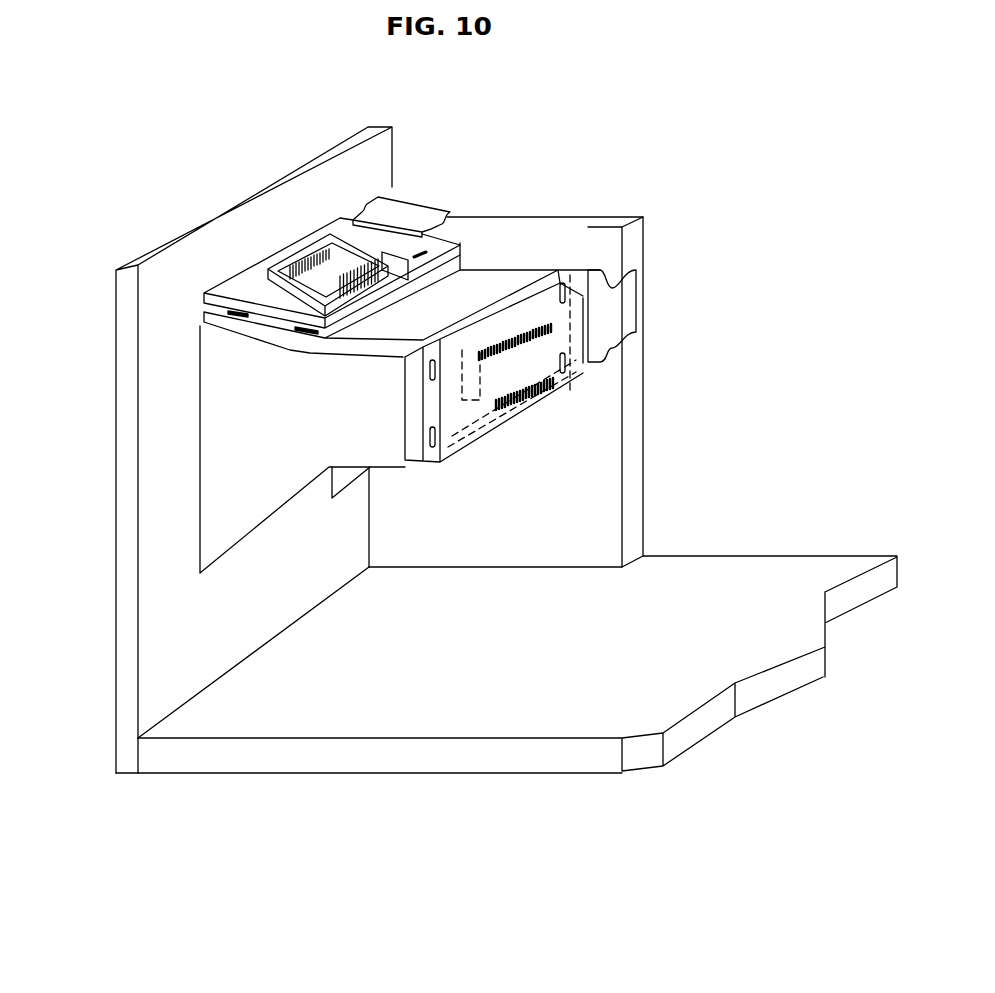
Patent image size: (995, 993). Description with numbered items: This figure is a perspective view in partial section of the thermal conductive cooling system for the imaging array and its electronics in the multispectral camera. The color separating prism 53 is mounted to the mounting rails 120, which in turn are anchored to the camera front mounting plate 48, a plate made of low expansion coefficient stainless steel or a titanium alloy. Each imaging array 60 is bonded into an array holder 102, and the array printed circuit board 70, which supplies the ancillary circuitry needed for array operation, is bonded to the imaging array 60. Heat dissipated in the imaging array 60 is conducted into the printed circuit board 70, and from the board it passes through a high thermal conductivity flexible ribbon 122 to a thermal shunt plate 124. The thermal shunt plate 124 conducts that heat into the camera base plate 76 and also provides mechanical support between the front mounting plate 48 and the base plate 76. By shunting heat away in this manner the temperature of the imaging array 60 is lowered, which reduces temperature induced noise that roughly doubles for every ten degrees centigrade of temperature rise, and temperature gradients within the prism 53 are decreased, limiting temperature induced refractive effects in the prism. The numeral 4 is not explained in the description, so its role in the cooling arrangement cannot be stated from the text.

The chassis 4 is at (182, 670).
The front mounting plate 48 is at (182, 237).
The color separating prism 53 is at (490, 287).
The imaging array 60 is at (335, 285).
The printed circuit board 70 is at (230, 284).
The base plate 76 is at (750, 567).
The array holder 102 is at (457, 267).
The mounting rail 120 is at (252, 452).
The flexible ribbon 122 is at (400, 213).
The thermal shunt plate 124 is at (637, 390).